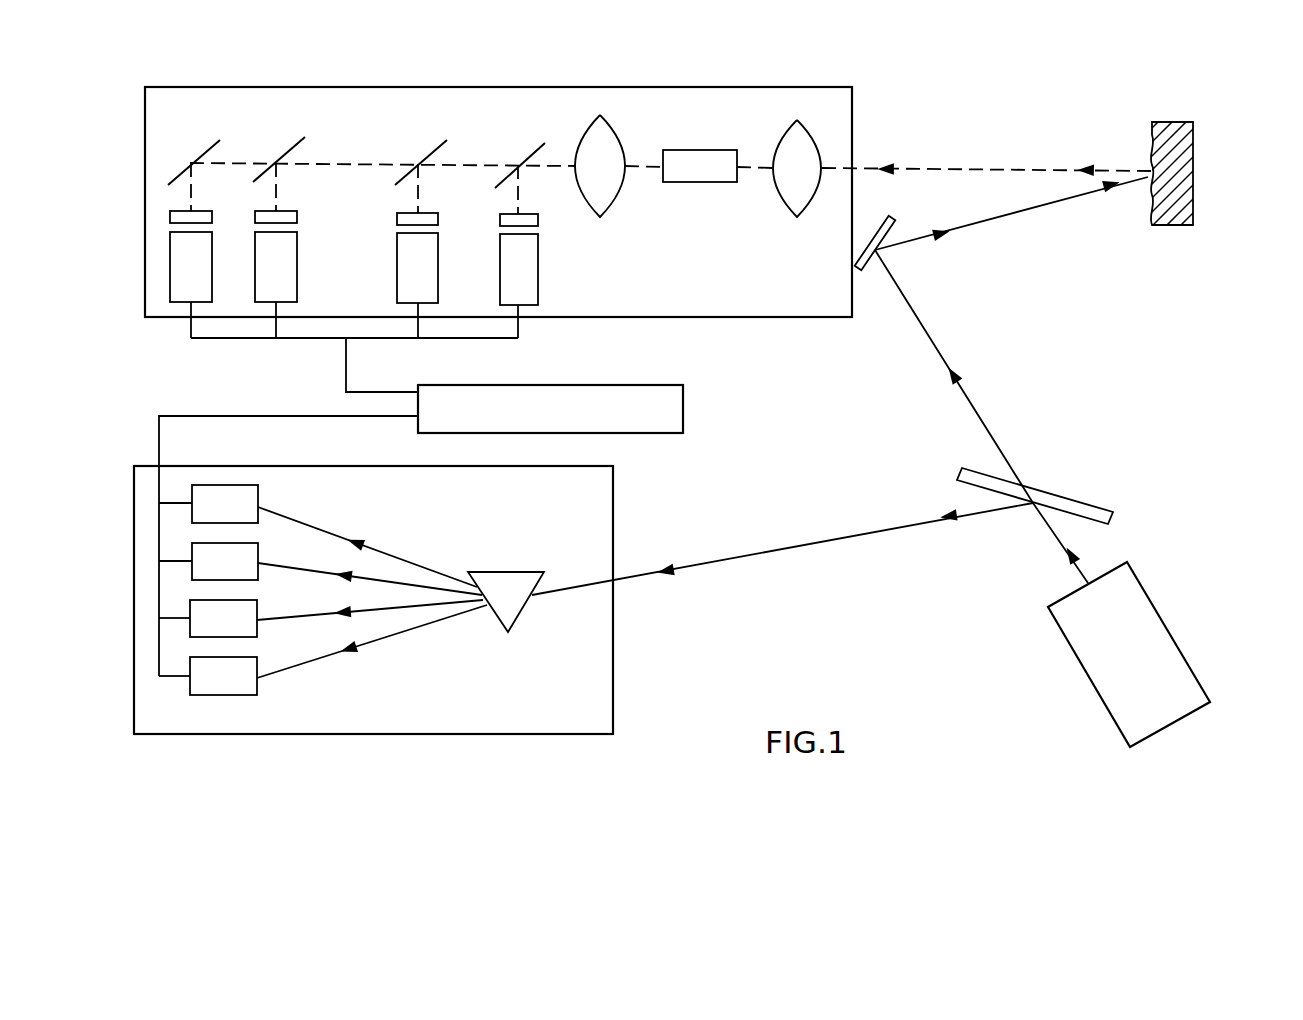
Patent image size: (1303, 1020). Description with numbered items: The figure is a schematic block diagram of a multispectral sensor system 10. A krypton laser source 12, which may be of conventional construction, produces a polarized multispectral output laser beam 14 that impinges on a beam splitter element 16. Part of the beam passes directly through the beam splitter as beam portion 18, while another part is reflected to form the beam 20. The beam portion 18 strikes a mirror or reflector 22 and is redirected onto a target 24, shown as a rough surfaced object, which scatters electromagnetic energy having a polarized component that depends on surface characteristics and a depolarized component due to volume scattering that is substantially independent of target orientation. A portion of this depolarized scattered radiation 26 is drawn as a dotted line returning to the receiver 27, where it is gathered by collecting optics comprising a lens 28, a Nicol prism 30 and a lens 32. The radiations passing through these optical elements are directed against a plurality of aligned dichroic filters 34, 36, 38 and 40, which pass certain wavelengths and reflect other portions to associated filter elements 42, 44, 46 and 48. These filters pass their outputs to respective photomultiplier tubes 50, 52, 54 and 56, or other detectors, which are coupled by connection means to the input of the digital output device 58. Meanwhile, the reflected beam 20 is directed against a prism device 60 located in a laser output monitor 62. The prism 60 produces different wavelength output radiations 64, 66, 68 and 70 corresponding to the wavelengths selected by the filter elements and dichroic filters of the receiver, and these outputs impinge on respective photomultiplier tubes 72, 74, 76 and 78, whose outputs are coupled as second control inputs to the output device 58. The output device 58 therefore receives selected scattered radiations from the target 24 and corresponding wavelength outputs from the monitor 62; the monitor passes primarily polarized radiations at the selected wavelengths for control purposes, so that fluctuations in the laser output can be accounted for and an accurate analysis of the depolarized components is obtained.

The multispectral sensor system 10 is at (934, 632).
The krypton laser source 12 is at (1175, 633).
The output laser beam 14 is at (1050, 532).
The beam splitter element 16 is at (1070, 500).
The beam portion 18 is at (975, 405).
The reflected beam 20 is at (778, 549).
The mirror 22 is at (885, 216).
The target 24 is at (1193, 172).
The depolarized scattered radiation 26 is at (955, 170).
The receiver 27 is at (668, 85).
The lens 28 is at (808, 207).
The Nicol prism 30 is at (700, 195).
The lens 32 is at (622, 195).
The dichroic filter 34 is at (540, 150).
The dichroic filter 36 is at (438, 146).
The dichroic filter 38 is at (295, 144).
The dichroic filter 40 is at (222, 140).
The filter element 42 is at (525, 213).
The filter element 44 is at (427, 210).
The filter element 46 is at (283, 209).
The filter element 48 is at (207, 209).
The photomultiplier tube 50 is at (538, 281).
The photomultiplier tube 52 is at (440, 267).
The photomultiplier tube 54 is at (297, 292).
The photomultiplier tube 56 is at (212, 268).
The digital output device 58 is at (683, 408).
The prism device 60 is at (505, 577).
The laser output monitor 62 is at (613, 523).
The wavelength output radiation 64 is at (320, 525).
The wavelength output radiation 66 is at (375, 577).
The wavelength output radiation 68 is at (383, 610).
The wavelength output radiation 70 is at (313, 663).
The photomultiplier tube 72 is at (243, 497).
The photomultiplier tube 74 is at (230, 545).
The photomultiplier tube 76 is at (232, 603).
The photomultiplier tube 78 is at (232, 660).